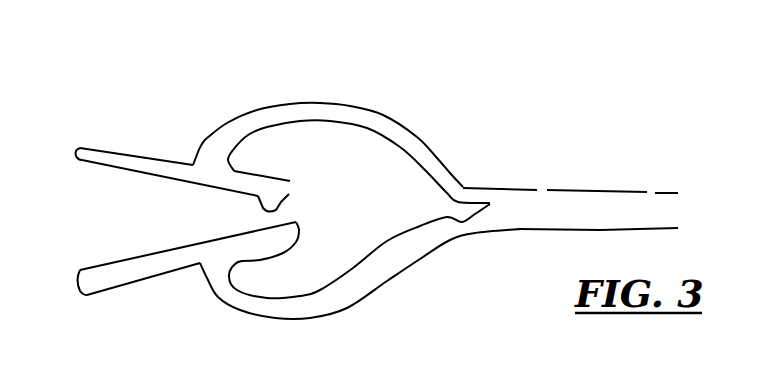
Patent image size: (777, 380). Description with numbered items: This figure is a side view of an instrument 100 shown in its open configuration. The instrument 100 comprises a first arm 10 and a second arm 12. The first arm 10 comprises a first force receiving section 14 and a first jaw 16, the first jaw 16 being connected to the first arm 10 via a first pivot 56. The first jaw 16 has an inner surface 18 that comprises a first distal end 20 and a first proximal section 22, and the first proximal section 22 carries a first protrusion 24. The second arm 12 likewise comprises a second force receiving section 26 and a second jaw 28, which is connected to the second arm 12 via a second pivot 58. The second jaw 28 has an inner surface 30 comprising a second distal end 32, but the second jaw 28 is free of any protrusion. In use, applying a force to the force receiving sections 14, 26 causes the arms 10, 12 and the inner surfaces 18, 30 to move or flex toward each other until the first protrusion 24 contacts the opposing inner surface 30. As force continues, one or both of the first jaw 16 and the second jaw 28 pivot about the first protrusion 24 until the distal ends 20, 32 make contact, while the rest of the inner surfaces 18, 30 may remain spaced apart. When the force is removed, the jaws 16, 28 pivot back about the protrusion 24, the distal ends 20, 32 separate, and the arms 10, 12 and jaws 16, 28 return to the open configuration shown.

The instrument 100 is at (497, 87).
The first arm 10 is at (441, 156).
The second arm 12 is at (421, 259).
The first force receiving section 14 is at (340, 106).
The first jaw 16 is at (136, 157).
The inner surface 18 is at (152, 175).
The first distal end 20 is at (80, 160).
The first proximal section 22 is at (273, 194).
The first protrusion 24 is at (282, 203).
The second force receiving section 26 is at (347, 310).
The second jaw 28 is at (138, 276).
The inner surface 30 is at (171, 250).
The second distal end 32 is at (82, 268).
The first pivot 56 is at (207, 138).
The second pivot 58 is at (203, 277).